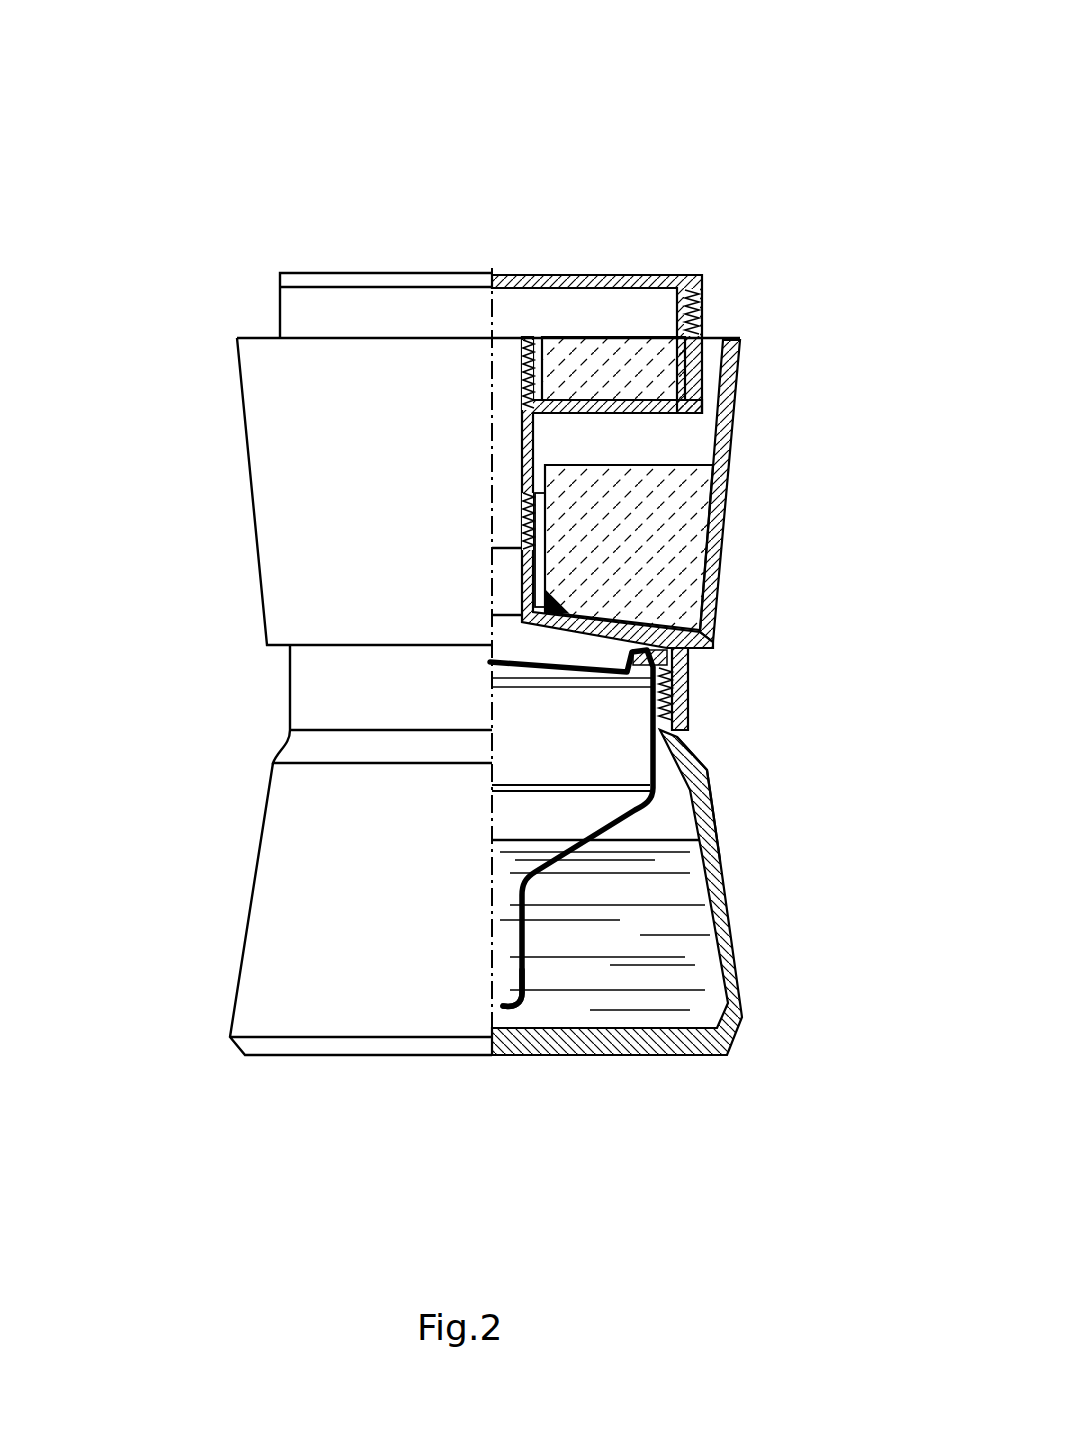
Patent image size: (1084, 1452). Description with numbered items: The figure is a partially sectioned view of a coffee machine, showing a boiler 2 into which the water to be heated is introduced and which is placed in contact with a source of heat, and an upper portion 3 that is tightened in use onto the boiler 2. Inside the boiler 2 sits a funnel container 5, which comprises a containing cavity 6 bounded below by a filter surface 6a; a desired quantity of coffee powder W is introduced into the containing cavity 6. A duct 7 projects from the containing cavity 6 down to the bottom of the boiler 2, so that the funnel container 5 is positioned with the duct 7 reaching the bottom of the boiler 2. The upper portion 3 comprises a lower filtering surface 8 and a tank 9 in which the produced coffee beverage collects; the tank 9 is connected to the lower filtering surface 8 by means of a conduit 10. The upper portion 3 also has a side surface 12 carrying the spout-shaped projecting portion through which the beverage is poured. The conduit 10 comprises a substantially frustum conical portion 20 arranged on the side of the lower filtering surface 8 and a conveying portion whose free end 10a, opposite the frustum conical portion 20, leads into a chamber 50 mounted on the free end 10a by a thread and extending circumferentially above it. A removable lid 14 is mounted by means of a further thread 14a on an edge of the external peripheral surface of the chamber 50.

The boiler 2 is at (740, 1007).
The upper portion 3 is at (800, 180).
The funnel container 5 is at (707, 800).
The containing cavity 6 is at (650, 710).
The filter surface 6a is at (567, 793).
The duct 7 is at (560, 1003).
The lower filtering surface 8 is at (567, 676).
The tank 9 is at (215, 420).
The conduit 10 is at (505, 340).
The free end 10a is at (532, 345).
The side surface 12 is at (747, 332).
The removable lid 14 is at (620, 276).
The further thread 14a is at (717, 276).
The frustum conical portion 20 is at (600, 620).
The chamber 50 is at (325, 303).
The coffee powder W is at (520, 720).